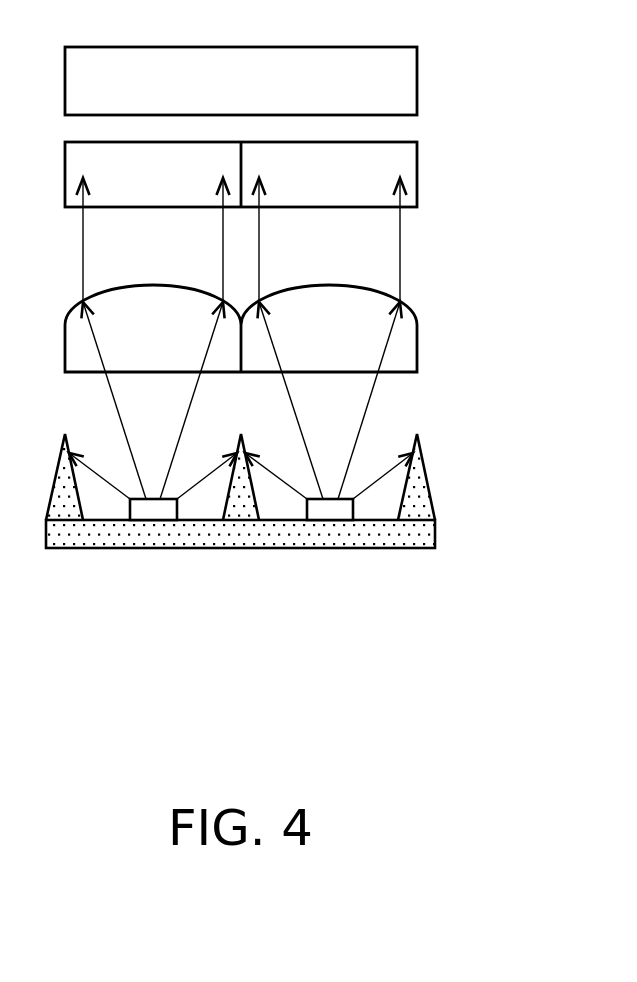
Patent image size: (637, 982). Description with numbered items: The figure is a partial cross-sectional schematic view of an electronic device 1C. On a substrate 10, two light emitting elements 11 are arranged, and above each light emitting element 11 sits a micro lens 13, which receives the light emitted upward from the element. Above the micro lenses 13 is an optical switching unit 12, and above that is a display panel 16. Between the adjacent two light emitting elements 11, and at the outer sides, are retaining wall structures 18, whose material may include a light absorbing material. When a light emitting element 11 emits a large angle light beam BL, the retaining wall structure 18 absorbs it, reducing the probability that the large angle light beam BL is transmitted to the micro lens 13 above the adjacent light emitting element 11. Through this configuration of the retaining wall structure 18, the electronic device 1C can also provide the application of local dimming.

The electronic device 1C is at (519, 695).
The substrate 10 is at (413, 537).
The light emitting element 11 is at (328, 510).
The optical switching unit 12 is at (406, 153).
The micro lens 13 is at (406, 350).
The display panel 16 is at (406, 82).
The retaining wall structure 18 is at (412, 497).
The large angle light beam BL is at (292, 492).